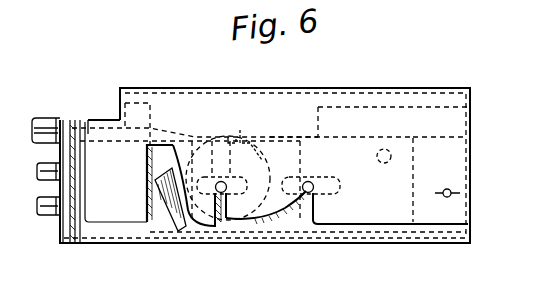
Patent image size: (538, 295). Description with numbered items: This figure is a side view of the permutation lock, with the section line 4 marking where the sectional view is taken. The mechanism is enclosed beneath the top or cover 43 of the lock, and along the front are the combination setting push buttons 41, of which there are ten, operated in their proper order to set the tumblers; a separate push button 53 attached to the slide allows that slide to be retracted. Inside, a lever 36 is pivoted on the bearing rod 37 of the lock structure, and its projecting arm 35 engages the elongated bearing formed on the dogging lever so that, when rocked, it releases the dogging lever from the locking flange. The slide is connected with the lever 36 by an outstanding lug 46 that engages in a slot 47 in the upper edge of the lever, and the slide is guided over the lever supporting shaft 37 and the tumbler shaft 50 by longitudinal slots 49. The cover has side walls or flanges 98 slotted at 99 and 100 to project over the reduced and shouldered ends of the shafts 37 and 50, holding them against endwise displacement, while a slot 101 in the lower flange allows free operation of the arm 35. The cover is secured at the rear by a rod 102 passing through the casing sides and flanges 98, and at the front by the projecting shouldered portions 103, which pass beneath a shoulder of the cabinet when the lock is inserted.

The section line 4- 4 is at (112, 97).
The projecting arm 35 is at (168, 205).
The lever 36 is at (223, 222).
The bearing rod 37 is at (226, 183).
The push buttons 41 is at (37, 206).
The top or cover 43 is at (330, 92).
The outstanding lug 46 is at (233, 140).
The slot 47 is at (242, 140).
The longitudinal slots 49 is at (348, 196).
The tumbler shaft 50 is at (311, 183).
The push button 53 is at (43, 124).
The side walls or flanges 98 is at (453, 182).
The slot 99 is at (217, 197).
The slot 100 is at (310, 197).
The slot 101 is at (153, 197).
The rod 102 is at (449, 197).
The projecting shouldered portions 103 is at (100, 120).